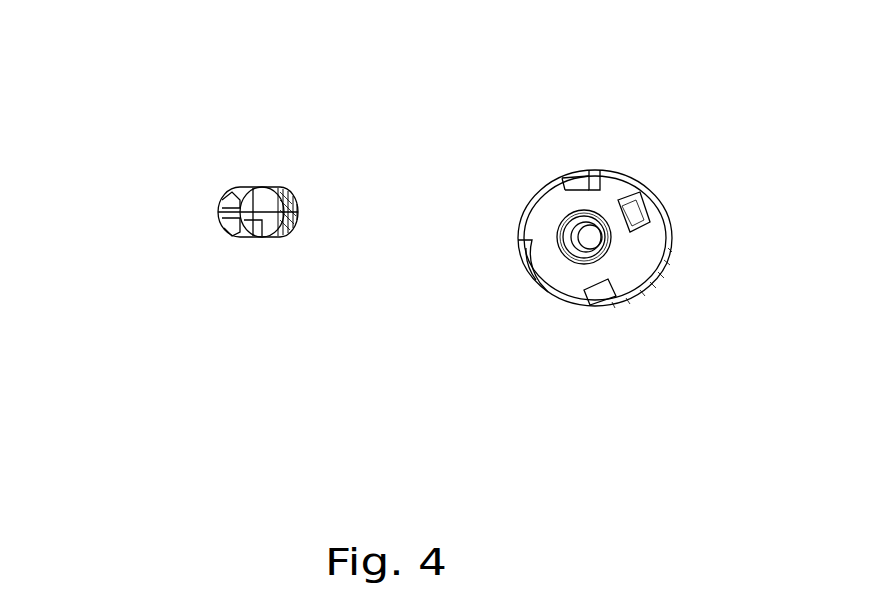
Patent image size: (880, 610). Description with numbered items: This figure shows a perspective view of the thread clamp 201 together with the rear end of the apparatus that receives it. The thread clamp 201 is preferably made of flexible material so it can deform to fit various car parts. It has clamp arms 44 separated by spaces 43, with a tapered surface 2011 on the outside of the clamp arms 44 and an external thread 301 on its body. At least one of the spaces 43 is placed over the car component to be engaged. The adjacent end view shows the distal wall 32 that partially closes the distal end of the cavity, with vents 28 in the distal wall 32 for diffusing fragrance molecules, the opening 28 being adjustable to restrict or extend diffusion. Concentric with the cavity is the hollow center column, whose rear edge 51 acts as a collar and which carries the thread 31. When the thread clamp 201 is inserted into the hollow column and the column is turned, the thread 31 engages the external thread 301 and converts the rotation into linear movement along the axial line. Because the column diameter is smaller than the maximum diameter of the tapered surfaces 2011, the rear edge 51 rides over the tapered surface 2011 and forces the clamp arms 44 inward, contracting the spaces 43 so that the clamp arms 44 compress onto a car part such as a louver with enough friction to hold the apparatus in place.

The thread clamp 201 is at (248, 178).
The external thread 301 is at (283, 192).
The space 43 is at (225, 209).
The clamp arm 44 is at (250, 228).
The tapered surface 2011 is at (268, 238).
The thread 31 is at (578, 240).
The distal wall 32 is at (597, 180).
The vent 28 is at (635, 215).
The rear edge 51 is at (572, 262).